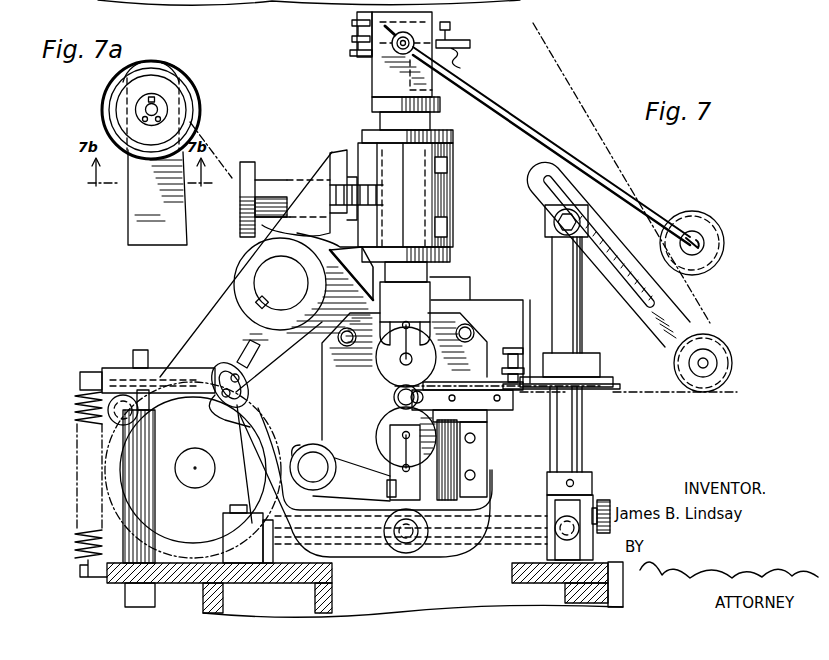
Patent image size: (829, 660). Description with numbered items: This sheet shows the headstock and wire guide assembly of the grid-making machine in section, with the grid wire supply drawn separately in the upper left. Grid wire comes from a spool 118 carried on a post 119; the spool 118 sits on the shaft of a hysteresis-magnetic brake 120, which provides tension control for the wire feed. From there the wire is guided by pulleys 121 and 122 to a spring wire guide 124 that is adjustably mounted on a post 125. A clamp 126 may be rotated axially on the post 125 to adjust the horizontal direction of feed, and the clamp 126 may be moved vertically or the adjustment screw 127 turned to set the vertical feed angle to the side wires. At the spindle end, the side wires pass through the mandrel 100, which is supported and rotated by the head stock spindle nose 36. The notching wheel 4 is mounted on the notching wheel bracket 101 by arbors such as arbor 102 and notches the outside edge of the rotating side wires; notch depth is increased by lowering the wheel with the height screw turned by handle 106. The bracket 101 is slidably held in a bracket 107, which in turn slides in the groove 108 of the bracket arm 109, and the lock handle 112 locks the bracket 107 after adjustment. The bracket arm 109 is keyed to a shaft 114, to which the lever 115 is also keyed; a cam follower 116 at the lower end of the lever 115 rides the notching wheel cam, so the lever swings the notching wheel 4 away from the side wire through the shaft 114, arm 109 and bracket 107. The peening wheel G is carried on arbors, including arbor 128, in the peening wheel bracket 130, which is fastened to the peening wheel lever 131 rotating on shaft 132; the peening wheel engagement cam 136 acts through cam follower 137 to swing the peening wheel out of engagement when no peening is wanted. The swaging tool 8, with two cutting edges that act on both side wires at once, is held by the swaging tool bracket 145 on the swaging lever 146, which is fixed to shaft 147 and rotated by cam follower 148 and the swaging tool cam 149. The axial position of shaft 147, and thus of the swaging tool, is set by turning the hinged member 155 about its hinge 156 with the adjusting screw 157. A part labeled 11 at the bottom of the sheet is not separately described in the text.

In FIG. 7A, the spool 118 is at (165, 92).
In FIG. 7A, the hysteresis-magnetic brake 120 is at (193, 107).
In FIG. 7A, the post 119 is at (127, 210).
In FIG. 7, the post 119 is at (372, 73).
In FIG. 7, the handle 106 is at (372, 103).
In FIG. 7, the groove 108 is at (358, 143).
In FIG. 7, the bracket arm 109 is at (332, 152).
In FIG. 7, the lock handle 112 is at (258, 162).
In FIG. 7, the bracket 107 is at (455, 186).
In FIG. 7, the notching wheel bracket 101 is at (425, 292).
In FIG. 7, the shaft 114 is at (268, 272).
In FIG. 7, the lever 115 is at (228, 302).
In FIG. 7, the cam follower 148 is at (322, 322).
In FIG. 7, the notching wheel arbor 102 is at (458, 334).
In FIG. 7, the notching wheel 4 is at (378, 352).
In FIG. 7, the head stock spindle nose 36 is at (376, 380).
In FIG. 7, the mandrel 100 is at (397, 398).
In FIG. 7, the peening wheel G is at (377, 441).
In FIG. 7, the peening wheel bracket 130 is at (418, 478).
In FIG. 7, the shaft 132 is at (318, 460).
In FIG. 7, the arbor 128 is at (400, 440).
In FIG. 7, the swaging tool bracket 145 is at (485, 458).
In FIG. 7, the swaging tool 8 is at (498, 412).
In FIG. 7, the spring wire guide 124 is at (545, 397).
In FIG. 7, the adjustment screw 127 is at (512, 346).
In FIG. 7, the clamp 126 is at (598, 362).
In FIG. 7, the post 125 is at (576, 318).
In FIG. 7, the pulley 121 is at (722, 241).
In FIG. 7, the pulley 122 is at (731, 360).
In FIG. 7, the peening wheel lever 131 is at (160, 378).
In FIG. 7, the cam follower 137 is at (228, 368).
In FIG. 7, the cam follower 116 is at (80, 389).
In FIG. 7, the swaging tool cam 149 is at (108, 479).
In FIG. 7, the peening wheel engagement cam 136 is at (118, 455).
In FIG. 7, the swaging lever 146 is at (247, 485).
In FIG. 7, the hinge 156 is at (223, 521).
In FIG. 7, the shaft 147 is at (404, 544).
In FIG. 7, the hinged member 155 is at (482, 546).
In FIG. 7, the adjusting screw 157 is at (557, 540).
In FIG. 7, the base 11 is at (577, 593).